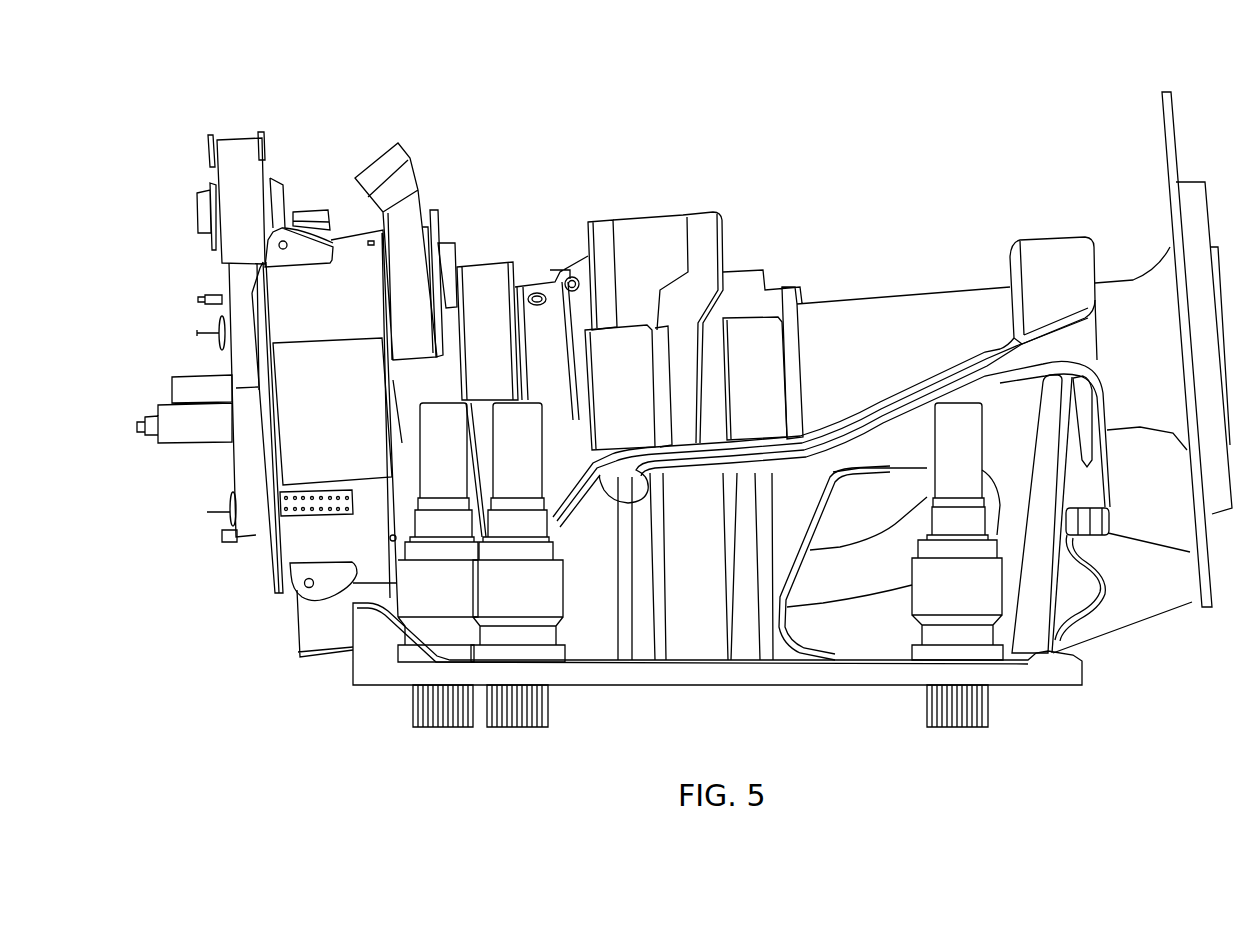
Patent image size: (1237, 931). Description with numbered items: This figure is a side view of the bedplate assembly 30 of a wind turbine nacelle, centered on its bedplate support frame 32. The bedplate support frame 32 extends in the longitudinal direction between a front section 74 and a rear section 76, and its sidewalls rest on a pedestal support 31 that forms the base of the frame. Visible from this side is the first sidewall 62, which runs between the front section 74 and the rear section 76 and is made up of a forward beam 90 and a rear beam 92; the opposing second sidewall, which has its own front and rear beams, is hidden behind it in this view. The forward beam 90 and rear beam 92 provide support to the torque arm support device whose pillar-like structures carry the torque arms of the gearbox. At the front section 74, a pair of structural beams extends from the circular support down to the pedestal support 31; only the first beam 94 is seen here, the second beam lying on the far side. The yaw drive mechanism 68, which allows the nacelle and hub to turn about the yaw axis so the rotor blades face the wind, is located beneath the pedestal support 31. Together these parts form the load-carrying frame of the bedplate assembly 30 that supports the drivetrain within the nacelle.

The bedplate assembly 30 is at (1042, 80).
The pedestal support 31 is at (1027, 684).
The bedplate support frame 32 is at (1137, 644).
The first sidewall 62 is at (695, 648).
The yaw drive mechanism 68 is at (497, 730).
The front section 74 is at (1010, 233).
The rear section 76 is at (364, 705).
The forward beam 90 is at (750, 648).
The rear beam 92 is at (645, 648).
The first beam 94 is at (1040, 465).